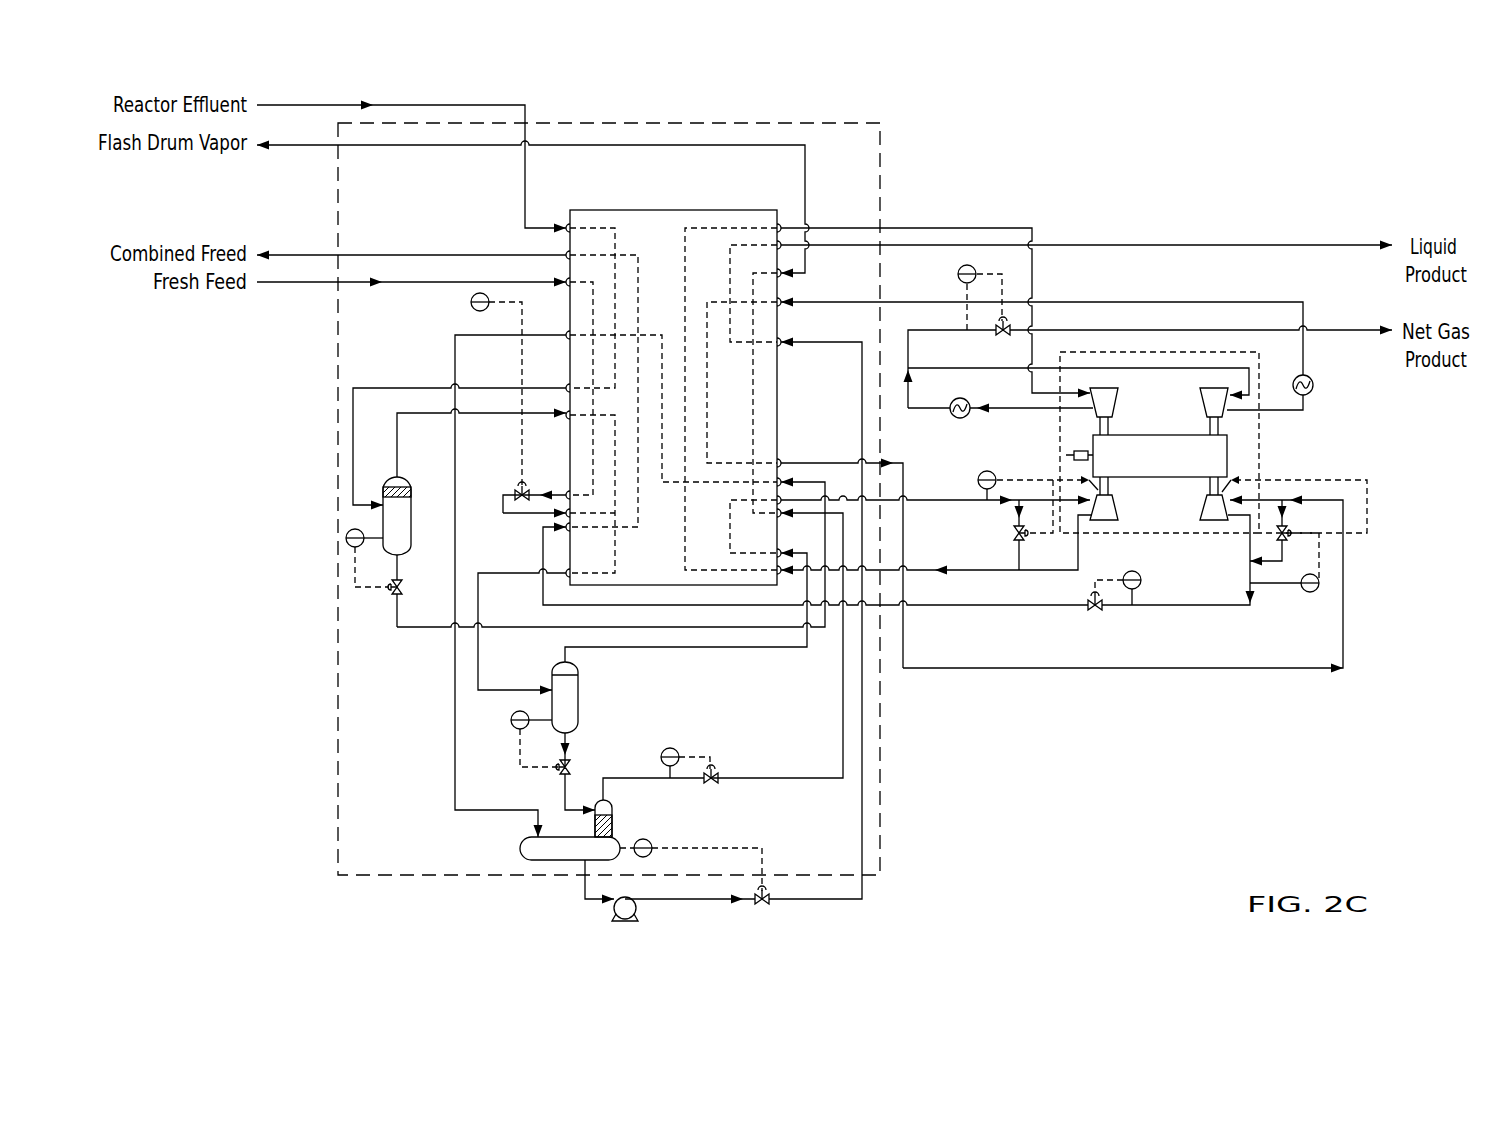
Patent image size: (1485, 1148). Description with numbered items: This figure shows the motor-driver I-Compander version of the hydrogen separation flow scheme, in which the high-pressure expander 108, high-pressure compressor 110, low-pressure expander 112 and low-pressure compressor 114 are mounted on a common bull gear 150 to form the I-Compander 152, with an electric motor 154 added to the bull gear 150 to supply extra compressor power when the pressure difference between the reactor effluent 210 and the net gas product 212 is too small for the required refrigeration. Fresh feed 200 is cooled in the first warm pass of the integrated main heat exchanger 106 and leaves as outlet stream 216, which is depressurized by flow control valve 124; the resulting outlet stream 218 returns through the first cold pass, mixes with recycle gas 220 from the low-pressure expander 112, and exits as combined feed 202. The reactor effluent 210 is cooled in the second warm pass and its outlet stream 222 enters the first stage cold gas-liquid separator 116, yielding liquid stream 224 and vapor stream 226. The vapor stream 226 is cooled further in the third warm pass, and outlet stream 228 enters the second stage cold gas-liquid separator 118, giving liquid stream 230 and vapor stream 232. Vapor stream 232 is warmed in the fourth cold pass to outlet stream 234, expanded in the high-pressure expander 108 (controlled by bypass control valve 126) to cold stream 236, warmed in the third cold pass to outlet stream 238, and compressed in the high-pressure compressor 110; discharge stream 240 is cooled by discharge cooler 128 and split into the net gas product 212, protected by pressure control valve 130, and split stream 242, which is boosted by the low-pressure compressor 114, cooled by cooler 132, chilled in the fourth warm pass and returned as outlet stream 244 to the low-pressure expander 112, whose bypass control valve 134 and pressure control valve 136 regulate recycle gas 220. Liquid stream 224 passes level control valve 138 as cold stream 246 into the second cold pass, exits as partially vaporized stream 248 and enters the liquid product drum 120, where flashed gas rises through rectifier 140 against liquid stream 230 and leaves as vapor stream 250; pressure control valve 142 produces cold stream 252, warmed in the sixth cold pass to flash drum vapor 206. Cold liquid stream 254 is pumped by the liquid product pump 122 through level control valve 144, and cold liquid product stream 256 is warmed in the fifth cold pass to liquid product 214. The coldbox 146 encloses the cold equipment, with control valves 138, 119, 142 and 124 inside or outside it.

The integrated main heat exchanger 106 is at (708, 208).
The high-pressure expander 108 is at (1118, 508).
The high-pressure compressor 110 is at (1108, 388).
The low-pressure expander 112 is at (1200, 505).
The low-pressure compressor 114 is at (1210, 388).
The first stage cold gas-liquid separator 116 is at (412, 515).
The second stage cold gas-liquid separator 118 is at (578, 690).
The control valve 119 is at (570, 770).
The liquid product drum 120 is at (520, 845).
The liquid product pump 122 is at (635, 918).
The flow control valve 124 is at (512, 492).
The bypass control valve 126 is at (1008, 535).
The high-pressure compressor discharge cooler 128 is at (968, 418).
The pressure control valve 130 is at (1000, 338).
The low-pressure compressor discharge cooler 132 is at (1315, 385).
The bypass control valve 134 is at (1295, 538).
The pressure control valve 136 is at (1097, 613).
The level control valve 138 is at (388, 590).
The rectifier 140 is at (612, 820).
The pressure control valve 142 is at (718, 785).
The level control valve 144 is at (768, 905).
The coldbox 146 is at (338, 718).
The bull gear 150 is at (1176, 466).
The I-Compander 152 is at (1262, 455).
The electric motor 154 is at (1068, 460).
The fresh feed 200 is at (285, 288).
The combined feed 202 is at (290, 248).
The flash drum vapor 206 is at (291, 150).
The reactor effluent 210 is at (292, 100).
The net gas product 212 is at (1333, 330).
The liquid product 214 is at (1333, 245).
The outlet stream 216 is at (548, 491).
The outlet stream 218 is at (514, 515).
The recycle gas 220 is at (1020, 607).
The outlet stream 222 is at (374, 385).
The liquid stream 224 is at (402, 565).
The vapor stream 226 is at (489, 412).
The outlet stream 228 is at (518, 575).
The liquid stream 230 is at (565, 790).
The vapor stream 232 is at (748, 647).
The outlet stream 234 is at (930, 497).
The cold stream 236 is at (990, 572).
The outlet stream 238 is at (972, 228).
The discharge stream 240 is at (1022, 408).
The split stream 242 is at (1145, 369).
The outlet stream 244 is at (905, 640).
The cold stream 246 is at (430, 627).
The partially vaporized stream 248 is at (455, 752).
The vapor stream 250 is at (620, 780).
The cold stream 252 is at (800, 778).
The cold liquid stream 254 is at (585, 900).
The cold liquid product stream 256 is at (862, 845).